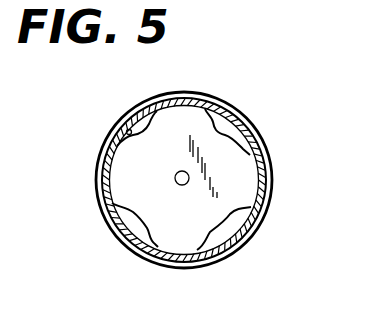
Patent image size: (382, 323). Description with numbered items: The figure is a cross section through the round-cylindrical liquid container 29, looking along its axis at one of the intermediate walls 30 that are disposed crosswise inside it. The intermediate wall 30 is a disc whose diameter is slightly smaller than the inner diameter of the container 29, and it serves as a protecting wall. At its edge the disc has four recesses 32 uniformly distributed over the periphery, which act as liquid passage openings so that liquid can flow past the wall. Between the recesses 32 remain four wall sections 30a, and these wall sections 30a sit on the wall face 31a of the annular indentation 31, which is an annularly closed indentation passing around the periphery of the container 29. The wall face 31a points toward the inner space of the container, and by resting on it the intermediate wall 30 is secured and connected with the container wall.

The liquid container 29 is at (265, 124).
The intermediate wall 30 is at (207, 210).
The wall section 30a is at (118, 183).
The annular indentation 31 is at (258, 167).
The wall face 31a is at (126, 133).
The recess 32 is at (142, 114).